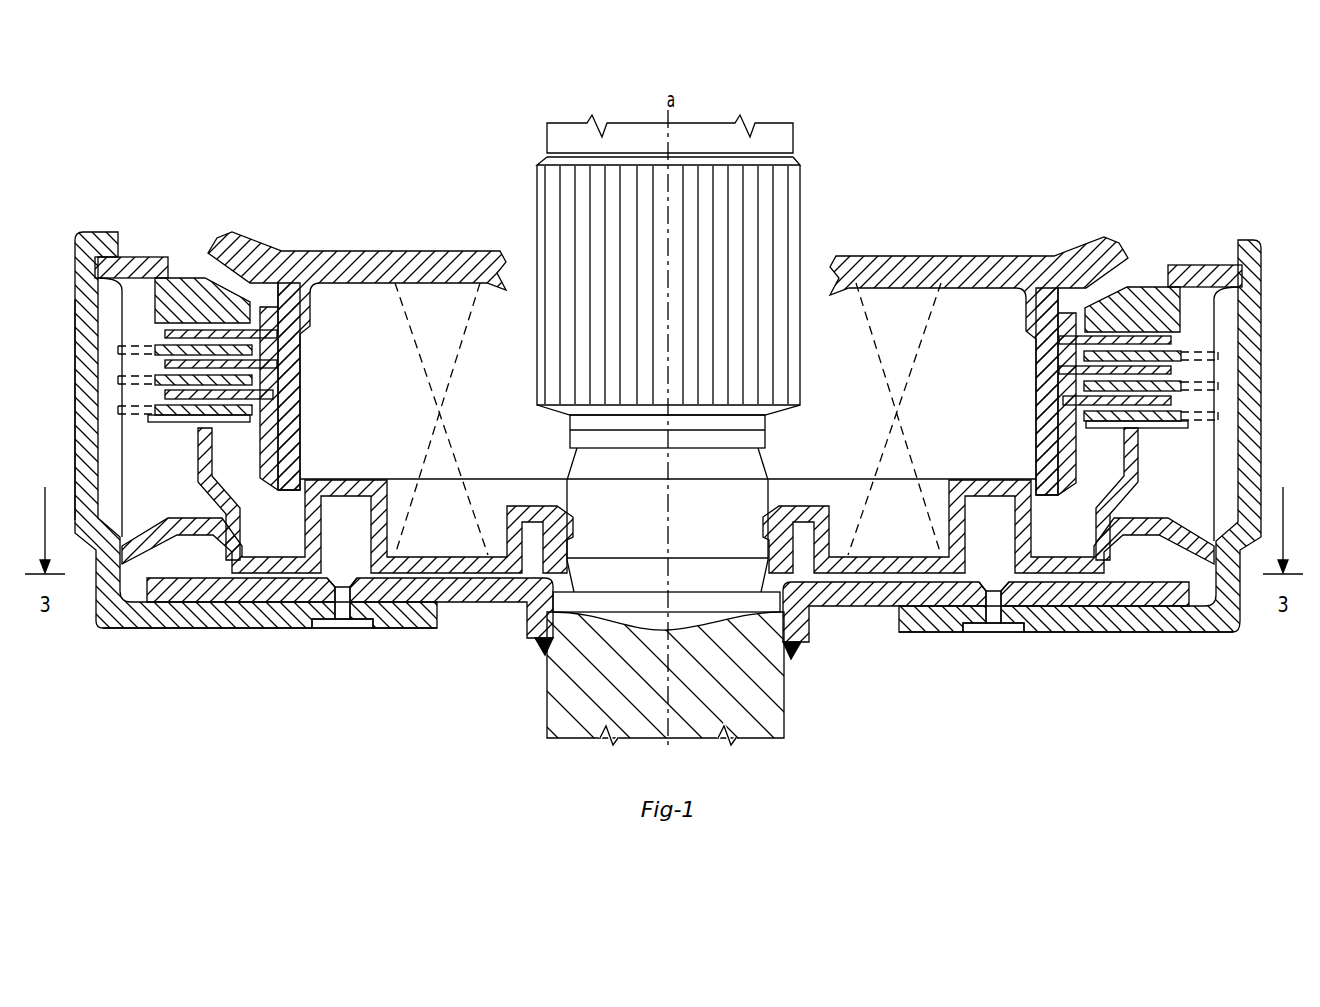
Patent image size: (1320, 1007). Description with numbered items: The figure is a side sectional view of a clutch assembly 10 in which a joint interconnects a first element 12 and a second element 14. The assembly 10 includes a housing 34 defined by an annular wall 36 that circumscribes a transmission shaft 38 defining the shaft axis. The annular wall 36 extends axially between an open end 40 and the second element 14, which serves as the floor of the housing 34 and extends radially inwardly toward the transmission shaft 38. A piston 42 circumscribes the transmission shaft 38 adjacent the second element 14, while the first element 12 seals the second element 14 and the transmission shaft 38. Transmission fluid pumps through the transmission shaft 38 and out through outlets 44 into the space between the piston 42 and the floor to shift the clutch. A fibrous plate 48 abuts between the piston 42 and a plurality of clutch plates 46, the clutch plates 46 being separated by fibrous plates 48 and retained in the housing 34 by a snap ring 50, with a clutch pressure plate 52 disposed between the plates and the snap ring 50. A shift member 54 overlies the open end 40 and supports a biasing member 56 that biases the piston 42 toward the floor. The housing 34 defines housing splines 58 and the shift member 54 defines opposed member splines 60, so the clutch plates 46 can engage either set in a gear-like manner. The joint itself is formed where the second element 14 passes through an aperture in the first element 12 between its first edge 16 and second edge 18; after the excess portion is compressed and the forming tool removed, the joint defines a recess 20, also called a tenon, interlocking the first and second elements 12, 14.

The clutch assembly 10 is at (452, 158).
The first element 12 is at (490, 600).
The second element 14 is at (266, 620).
The first edge 16 is at (325, 587).
The second edge 18 is at (350, 616).
The recess 20 is at (343, 624).
The housing 34 is at (79, 222).
The annular wall 36 is at (85, 452).
The transmission shaft 38 is at (790, 145).
The open end 40 is at (1145, 232).
The piston 42 is at (291, 556).
The outlets 44 is at (573, 532).
The clutch plates 46 is at (1175, 348).
The fibrous plates 48 is at (1172, 376).
The snap ring 50 is at (140, 256).
The clutch pressure plate 52 is at (192, 277).
The shift member 54 is at (445, 250).
The biasing member 56 is at (457, 363).
The housing splines 58 is at (1223, 428).
The member splines 60 is at (272, 420).